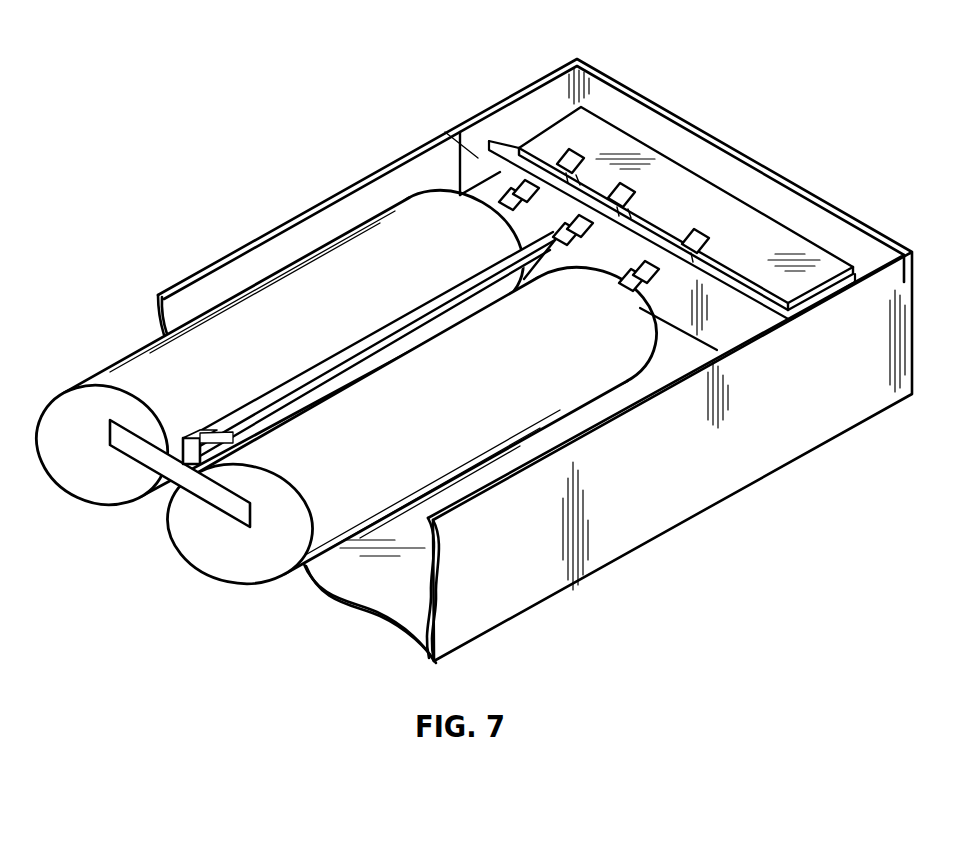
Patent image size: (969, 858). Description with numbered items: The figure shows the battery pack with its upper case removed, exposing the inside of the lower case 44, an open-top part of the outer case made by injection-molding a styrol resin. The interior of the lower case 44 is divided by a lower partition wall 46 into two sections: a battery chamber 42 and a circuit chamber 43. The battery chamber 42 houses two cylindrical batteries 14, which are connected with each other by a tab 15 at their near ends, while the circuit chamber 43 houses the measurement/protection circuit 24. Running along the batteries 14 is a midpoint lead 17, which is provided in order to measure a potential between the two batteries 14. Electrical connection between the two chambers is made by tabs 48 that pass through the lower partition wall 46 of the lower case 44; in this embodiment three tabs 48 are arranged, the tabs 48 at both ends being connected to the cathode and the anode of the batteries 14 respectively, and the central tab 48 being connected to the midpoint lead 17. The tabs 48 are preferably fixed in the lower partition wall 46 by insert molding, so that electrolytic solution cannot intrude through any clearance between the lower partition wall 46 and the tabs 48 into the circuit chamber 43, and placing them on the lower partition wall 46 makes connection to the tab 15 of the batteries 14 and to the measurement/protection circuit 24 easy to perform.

The batteries 14 is at (92, 470).
The tab 15 is at (155, 463).
The midpoint lead 17 is at (330, 367).
The measurement/protection circuit 24 is at (727, 207).
The battery chamber 42 is at (342, 383).
The circuit chamber 43 is at (548, 88).
The lower case 44 is at (707, 163).
The lower partition wall 46 is at (423, 146).
The tabs 48 is at (508, 187).